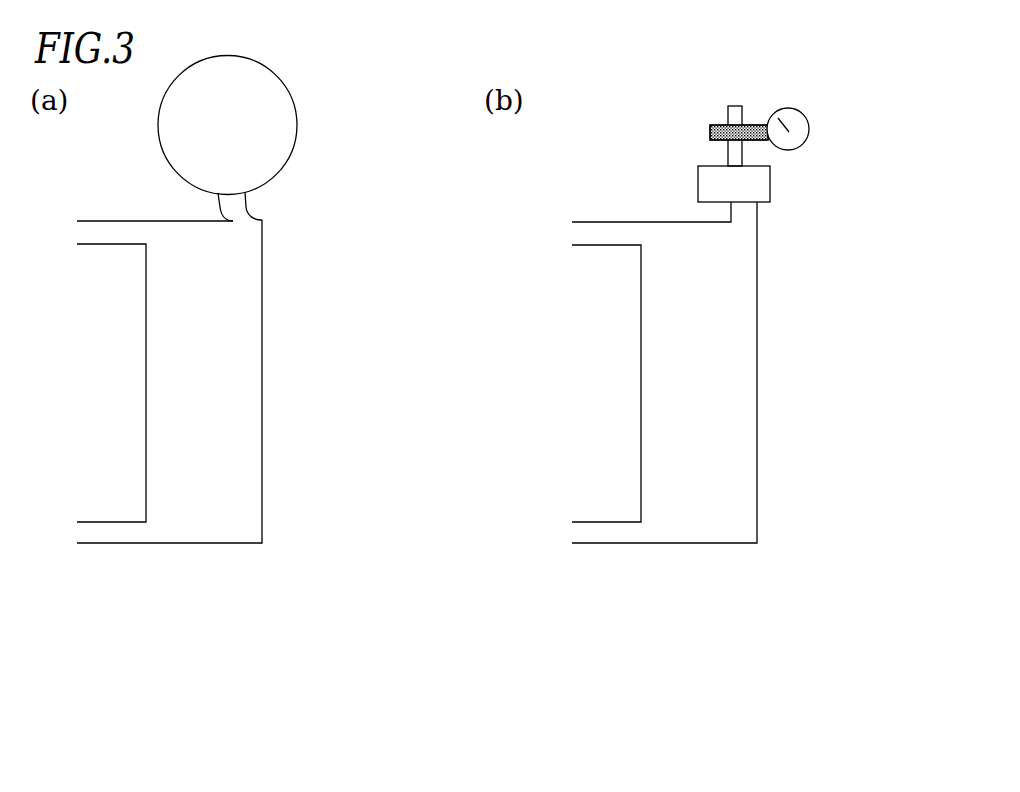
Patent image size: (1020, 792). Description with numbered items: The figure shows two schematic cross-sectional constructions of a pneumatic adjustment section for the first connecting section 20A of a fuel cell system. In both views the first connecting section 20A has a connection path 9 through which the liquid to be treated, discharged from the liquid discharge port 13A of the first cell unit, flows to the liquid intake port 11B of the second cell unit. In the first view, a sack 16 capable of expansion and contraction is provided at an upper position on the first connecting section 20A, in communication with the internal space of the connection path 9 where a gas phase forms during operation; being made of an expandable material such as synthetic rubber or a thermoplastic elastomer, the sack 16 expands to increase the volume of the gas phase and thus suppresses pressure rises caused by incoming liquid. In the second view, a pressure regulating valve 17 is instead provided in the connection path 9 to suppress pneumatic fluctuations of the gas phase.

The connection path 9 is at (213, 370).
The liquid intake port 11B is at (104, 523).
The liquid discharge port 13A is at (107, 233).
The sack 16 is at (265, 73).
The pressure regulating valve 17 is at (801, 93).
The first connecting section 20A is at (341, 204).